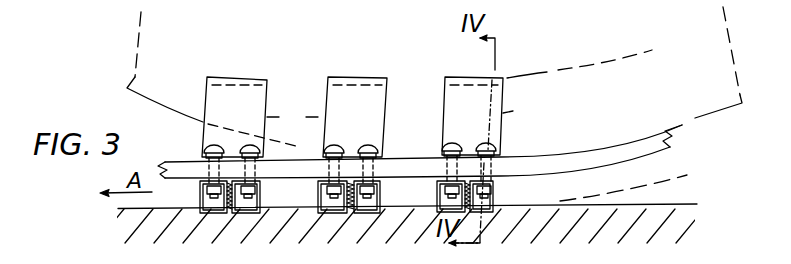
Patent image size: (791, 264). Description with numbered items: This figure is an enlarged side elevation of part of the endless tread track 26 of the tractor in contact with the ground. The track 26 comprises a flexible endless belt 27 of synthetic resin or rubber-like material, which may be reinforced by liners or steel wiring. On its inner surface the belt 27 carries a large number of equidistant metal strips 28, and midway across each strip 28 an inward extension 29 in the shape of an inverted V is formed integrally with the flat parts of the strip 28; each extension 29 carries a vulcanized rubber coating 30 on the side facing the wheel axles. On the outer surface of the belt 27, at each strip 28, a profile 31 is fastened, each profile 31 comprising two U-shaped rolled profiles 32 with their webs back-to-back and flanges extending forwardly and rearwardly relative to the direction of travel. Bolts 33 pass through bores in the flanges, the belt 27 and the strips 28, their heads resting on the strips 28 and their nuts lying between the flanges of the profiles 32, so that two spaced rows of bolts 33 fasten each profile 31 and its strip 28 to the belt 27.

The track 26 is at (302, 96).
The endless belt 27 is at (578, 155).
The metal strip 28 is at (500, 156).
The inward extension 29 is at (374, 123).
The rubber coating 30 is at (208, 93).
The profile 31 is at (197, 205).
The U-shaped rolled profile 32 is at (317, 208).
The bolt 33 is at (372, 148).